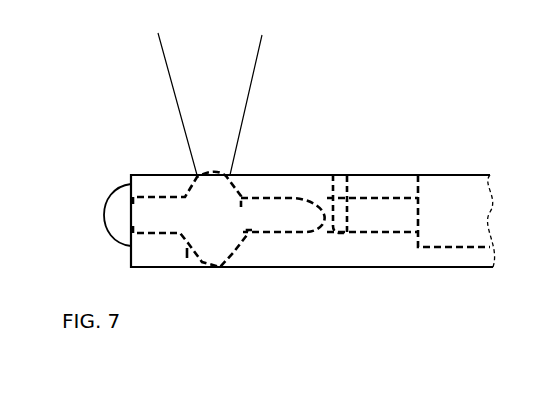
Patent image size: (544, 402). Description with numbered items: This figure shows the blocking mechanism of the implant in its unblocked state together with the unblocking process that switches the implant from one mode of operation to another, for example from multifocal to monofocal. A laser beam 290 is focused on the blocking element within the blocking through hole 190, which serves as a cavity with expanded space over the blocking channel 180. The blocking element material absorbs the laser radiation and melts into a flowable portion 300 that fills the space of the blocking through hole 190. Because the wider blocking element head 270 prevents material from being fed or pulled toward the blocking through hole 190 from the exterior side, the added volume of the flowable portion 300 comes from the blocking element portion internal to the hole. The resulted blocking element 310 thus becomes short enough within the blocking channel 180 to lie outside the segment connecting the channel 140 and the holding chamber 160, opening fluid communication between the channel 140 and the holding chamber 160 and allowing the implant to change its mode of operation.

The channel 140 is at (341, 168).
The holding chamber 160 is at (437, 245).
The blocking channel 180 is at (378, 242).
The blocking through hole 190 is at (179, 178).
The blocking element head 270 is at (100, 187).
The laser beam 290 is at (198, 74).
The flowable portion 300 is at (219, 260).
The resulted blocking element 310 is at (288, 226).